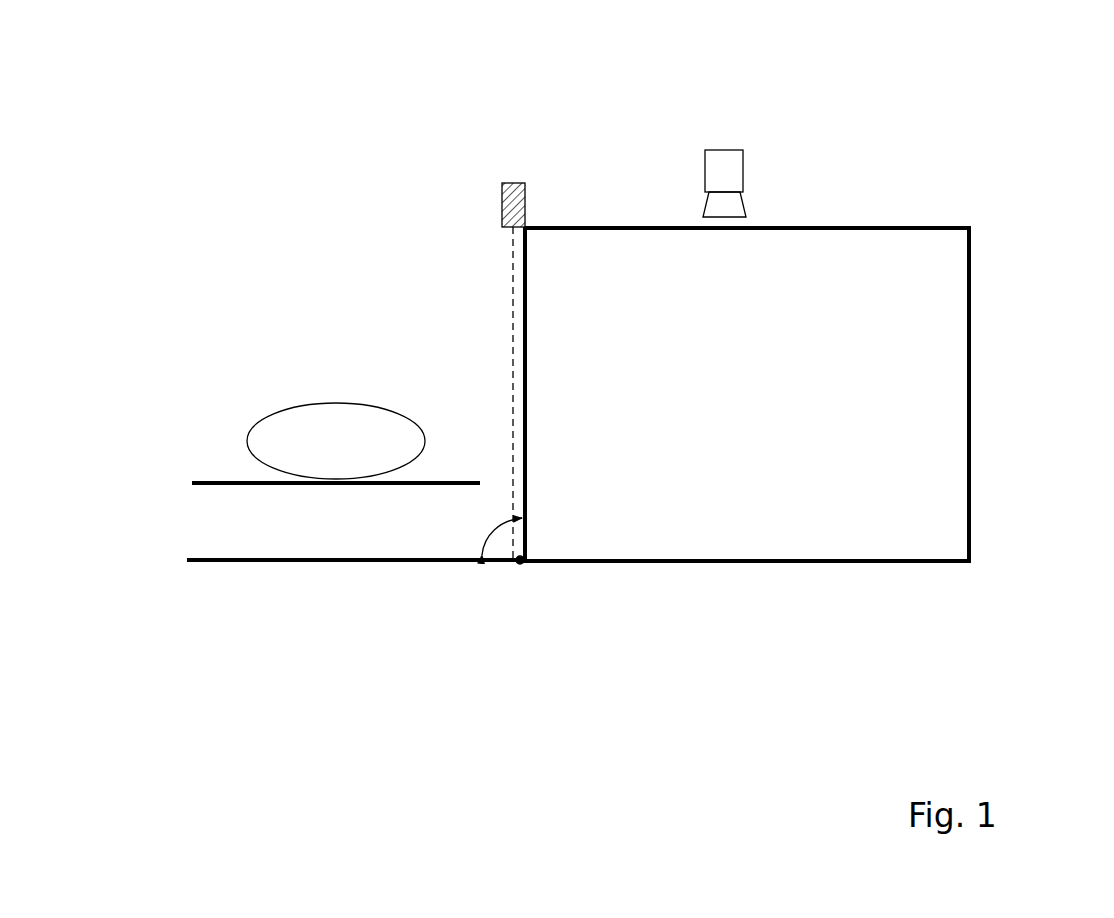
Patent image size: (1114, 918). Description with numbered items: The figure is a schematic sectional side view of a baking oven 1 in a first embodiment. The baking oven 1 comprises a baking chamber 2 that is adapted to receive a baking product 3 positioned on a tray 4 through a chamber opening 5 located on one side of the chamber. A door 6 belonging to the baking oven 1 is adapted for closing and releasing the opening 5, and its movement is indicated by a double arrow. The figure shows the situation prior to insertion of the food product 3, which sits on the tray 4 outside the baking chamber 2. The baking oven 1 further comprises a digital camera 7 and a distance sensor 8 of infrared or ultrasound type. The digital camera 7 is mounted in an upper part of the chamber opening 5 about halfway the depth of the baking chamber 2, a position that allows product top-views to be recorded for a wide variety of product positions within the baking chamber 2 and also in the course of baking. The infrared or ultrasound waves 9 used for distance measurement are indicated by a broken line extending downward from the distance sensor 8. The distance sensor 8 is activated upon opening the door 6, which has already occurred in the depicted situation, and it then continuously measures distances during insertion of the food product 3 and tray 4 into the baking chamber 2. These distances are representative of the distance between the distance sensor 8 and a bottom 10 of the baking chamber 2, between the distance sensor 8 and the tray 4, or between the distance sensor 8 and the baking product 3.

The baking oven 1 is at (960, 128).
The baking chamber 2 is at (947, 330).
The baking product 3 is at (297, 422).
The tray 4 is at (192, 483).
The chamber opening 5 is at (527, 255).
The door 6 is at (188, 560).
The digital camera 7 is at (735, 158).
The distance sensor 8 is at (500, 188).
The infrared or ultrasound waves 9 is at (512, 320).
The bottom 10 is at (768, 560).